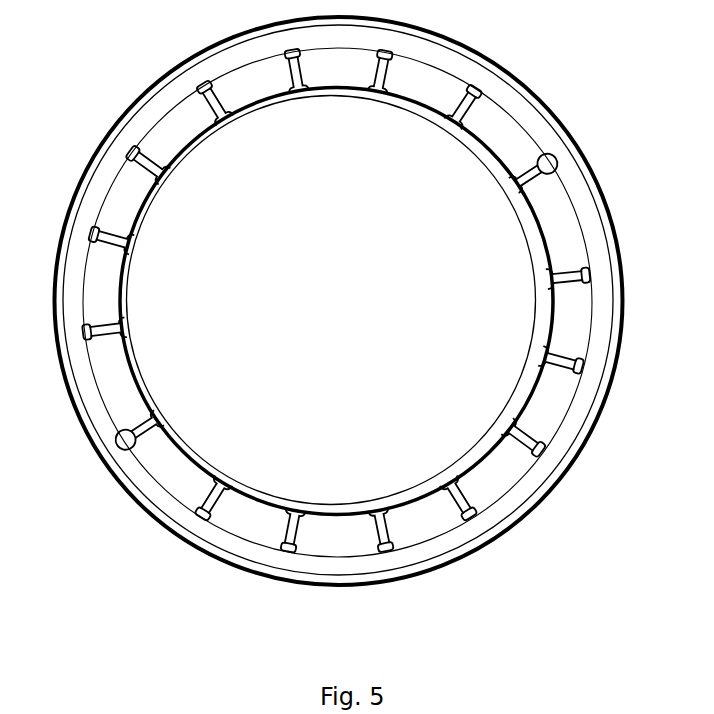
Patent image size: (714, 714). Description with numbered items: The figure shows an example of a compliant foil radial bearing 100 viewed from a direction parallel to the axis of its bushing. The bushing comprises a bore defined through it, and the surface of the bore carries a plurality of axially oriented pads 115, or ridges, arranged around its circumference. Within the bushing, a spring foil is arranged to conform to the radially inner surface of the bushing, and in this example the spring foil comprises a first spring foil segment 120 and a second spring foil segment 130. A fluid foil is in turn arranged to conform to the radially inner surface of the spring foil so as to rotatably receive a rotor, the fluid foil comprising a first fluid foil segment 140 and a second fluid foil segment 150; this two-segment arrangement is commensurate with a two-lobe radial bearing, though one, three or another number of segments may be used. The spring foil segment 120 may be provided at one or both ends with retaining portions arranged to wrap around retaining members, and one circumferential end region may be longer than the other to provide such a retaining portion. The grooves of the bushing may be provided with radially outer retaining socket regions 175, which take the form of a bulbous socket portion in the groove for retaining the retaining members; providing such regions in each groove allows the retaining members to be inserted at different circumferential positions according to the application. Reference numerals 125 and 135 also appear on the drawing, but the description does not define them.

The compliant foil radial bearing 100 is at (85, 94).
The pads 115 is at (423, 523).
The first spring foil segment 120 is at (142, 194).
The tab 125 is at (288, 74).
The second spring foil segment 130 is at (548, 386).
The rib 135 is at (523, 462).
The first fluid foil segment 140 is at (252, 128).
The second fluid foil segment 150 is at (405, 497).
The radially outer retaining socket regions 175 is at (559, 164).